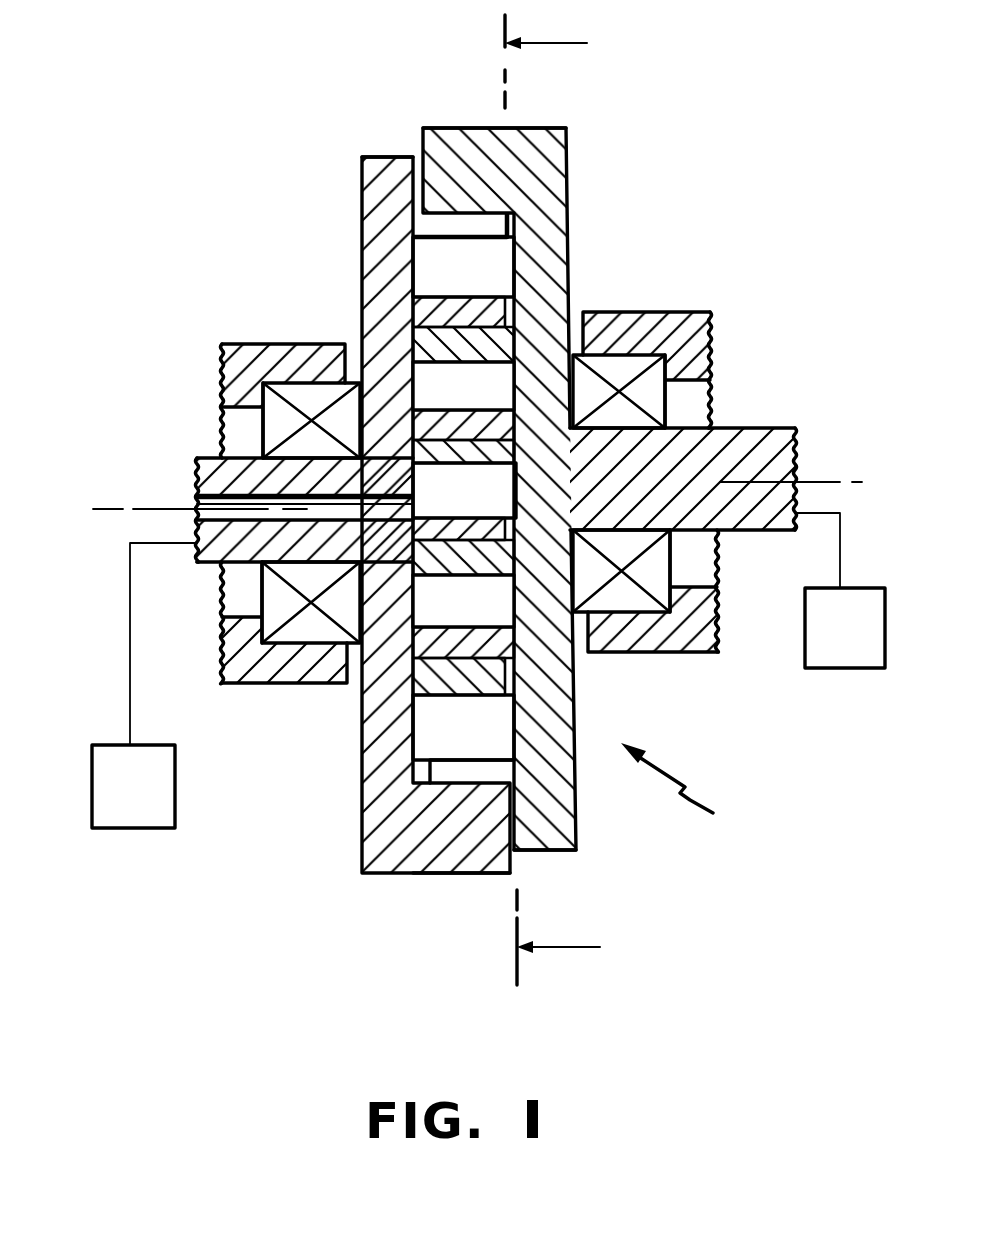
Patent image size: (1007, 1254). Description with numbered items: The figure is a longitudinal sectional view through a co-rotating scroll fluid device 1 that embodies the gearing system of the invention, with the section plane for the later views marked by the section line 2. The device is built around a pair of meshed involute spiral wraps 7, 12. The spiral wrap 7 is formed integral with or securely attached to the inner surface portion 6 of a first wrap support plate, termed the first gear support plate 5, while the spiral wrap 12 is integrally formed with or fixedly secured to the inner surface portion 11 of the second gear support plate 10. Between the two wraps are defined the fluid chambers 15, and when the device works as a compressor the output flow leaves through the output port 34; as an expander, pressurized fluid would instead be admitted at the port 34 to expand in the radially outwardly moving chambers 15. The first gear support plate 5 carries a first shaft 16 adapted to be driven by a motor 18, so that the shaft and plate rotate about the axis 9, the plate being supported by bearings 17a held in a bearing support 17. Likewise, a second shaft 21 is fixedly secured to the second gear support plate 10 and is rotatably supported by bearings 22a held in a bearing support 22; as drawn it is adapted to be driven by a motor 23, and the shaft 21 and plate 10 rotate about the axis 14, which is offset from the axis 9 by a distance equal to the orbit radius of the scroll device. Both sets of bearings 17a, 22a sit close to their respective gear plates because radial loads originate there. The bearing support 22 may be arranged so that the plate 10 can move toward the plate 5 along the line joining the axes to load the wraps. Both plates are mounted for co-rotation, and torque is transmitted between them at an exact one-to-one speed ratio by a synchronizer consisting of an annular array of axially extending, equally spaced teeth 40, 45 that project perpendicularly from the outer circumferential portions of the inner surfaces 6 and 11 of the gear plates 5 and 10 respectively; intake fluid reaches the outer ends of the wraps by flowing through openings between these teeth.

The scroll fluid device 1 is at (677, 790).
The section line 2- 2 is at (563, 500).
The first gear support plate 5 is at (530, 489).
The inner surface portion 6 is at (513, 733).
The spiral wrap 7 is at (463, 727).
The axis 9 is at (791, 451).
The second gear support plate 10 is at (396, 515).
The inner surface portion 11 is at (416, 280).
The spiral wrap 12 is at (474, 297).
The axis 14 is at (103, 509).
The fluid chambers 15 is at (463, 494).
The first shaft 16 is at (683, 445).
The bearing support 17 is at (651, 455).
The bearings 17a is at (621, 435).
The motor 18 is at (840, 630).
The second shaft 21 is at (260, 493).
The bearing support 22 is at (266, 344).
The bearings 22a is at (311, 567).
The motor 23 is at (141, 723).
The output port 34 is at (197, 497).
The teeth 40 is at (443, 128).
The teeth 45 is at (413, 157).